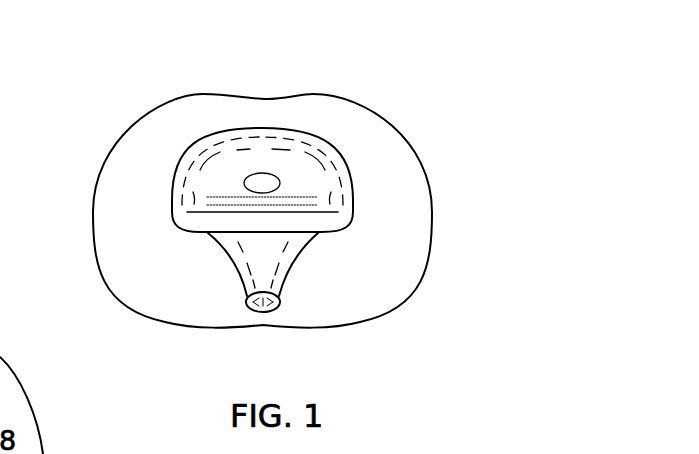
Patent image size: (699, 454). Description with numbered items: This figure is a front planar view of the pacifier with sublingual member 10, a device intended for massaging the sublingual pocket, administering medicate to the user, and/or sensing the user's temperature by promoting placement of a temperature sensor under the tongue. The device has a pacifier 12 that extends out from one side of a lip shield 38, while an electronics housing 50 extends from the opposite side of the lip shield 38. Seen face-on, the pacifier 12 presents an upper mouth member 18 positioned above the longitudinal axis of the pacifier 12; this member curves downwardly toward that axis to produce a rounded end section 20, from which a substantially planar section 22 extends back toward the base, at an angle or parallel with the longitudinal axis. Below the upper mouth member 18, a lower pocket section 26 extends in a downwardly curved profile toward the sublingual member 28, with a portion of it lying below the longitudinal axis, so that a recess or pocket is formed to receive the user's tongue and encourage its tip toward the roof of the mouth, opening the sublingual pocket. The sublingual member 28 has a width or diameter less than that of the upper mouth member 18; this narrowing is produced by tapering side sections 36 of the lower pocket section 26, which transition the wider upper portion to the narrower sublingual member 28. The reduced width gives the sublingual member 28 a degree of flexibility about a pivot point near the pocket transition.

The pacifier with sublingual member 10 is at (115, 80).
The pacifier 12 is at (176, 170).
The upper mouth member 18 is at (252, 128).
The end section 20 is at (272, 173).
The substantially planar section 22 is at (318, 221).
The lower pocket section 26 is at (265, 248).
The sublingual member 28 is at (263, 308).
The tapering side sections 36 is at (233, 262).
The lip shield 38 is at (398, 130).
The electronics housing 50 is at (0, 340).